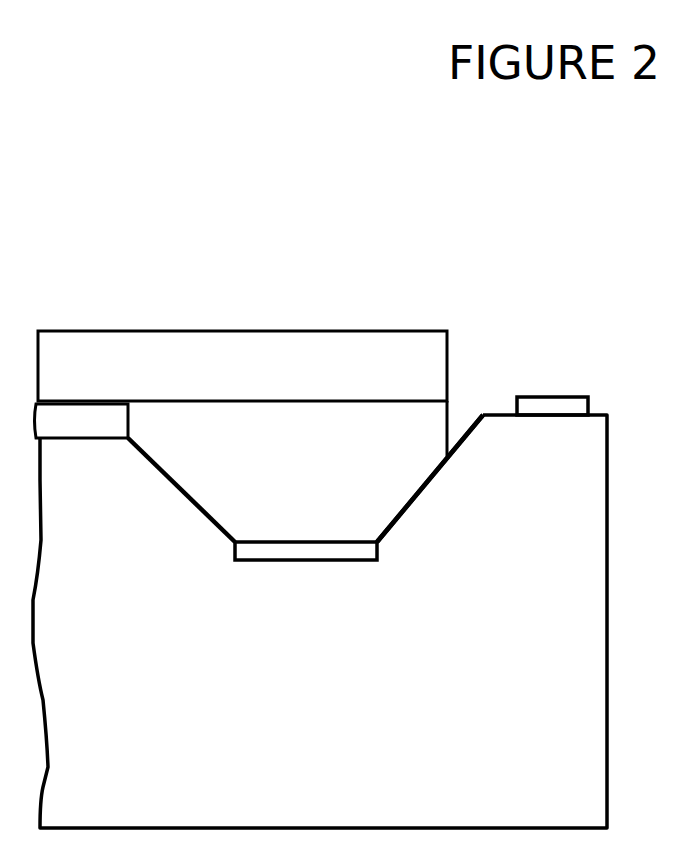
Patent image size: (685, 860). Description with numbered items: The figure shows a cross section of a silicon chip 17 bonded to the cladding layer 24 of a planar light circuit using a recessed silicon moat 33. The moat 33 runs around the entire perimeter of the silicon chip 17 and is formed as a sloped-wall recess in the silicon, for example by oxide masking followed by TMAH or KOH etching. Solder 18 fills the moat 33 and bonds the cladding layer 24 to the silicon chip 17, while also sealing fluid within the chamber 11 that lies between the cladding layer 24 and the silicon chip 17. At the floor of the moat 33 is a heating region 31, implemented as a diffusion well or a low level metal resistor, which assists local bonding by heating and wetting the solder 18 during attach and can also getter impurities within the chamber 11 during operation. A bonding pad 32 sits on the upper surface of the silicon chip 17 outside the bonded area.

The chamber 11 is at (98, 435).
The silicon chip 17 is at (462, 705).
The solder 18 is at (365, 456).
The cladding layer 24 is at (353, 388).
The heating region 31 is at (360, 560).
The bonding pad 32 is at (572, 395).
The recessed silicon moat 33 is at (465, 415).